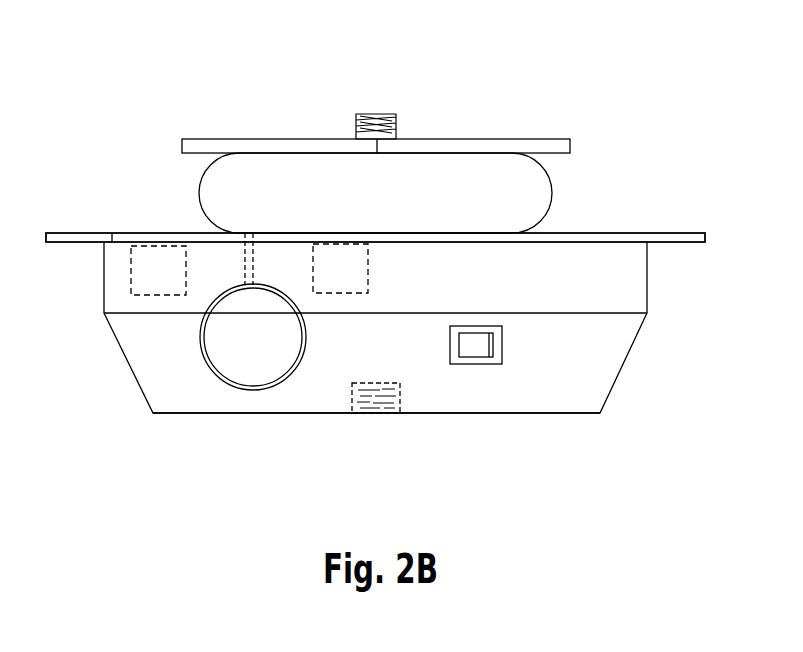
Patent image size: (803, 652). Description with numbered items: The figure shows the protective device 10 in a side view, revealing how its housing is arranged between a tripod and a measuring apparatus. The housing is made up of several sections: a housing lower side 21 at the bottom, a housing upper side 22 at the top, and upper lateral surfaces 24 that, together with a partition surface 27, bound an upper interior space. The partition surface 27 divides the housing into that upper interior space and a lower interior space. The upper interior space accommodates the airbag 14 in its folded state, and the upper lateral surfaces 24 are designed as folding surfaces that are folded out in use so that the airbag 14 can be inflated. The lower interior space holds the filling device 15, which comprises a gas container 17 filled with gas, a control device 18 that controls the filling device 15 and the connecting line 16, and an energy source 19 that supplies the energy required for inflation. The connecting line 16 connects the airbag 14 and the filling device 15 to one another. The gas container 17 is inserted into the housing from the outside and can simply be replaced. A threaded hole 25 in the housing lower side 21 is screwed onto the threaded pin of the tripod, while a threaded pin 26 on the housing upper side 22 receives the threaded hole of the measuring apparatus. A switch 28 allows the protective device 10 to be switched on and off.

The protective device 10 is at (176, 96).
The airbag 14 is at (562, 187).
The filling device 15 is at (155, 349).
The connecting line 16 is at (245, 255).
The gas container 17 is at (251, 333).
The control device 18 is at (340, 268).
The energy source 19 is at (158, 270).
The housing lower side 21 is at (548, 413).
The housing upper side 22 is at (468, 146).
The upper lateral surfaces 24 is at (73, 233).
The threaded hole 25 is at (375, 400).
The threaded pin 26 is at (378, 112).
The partition surface 27 is at (137, 233).
The switch 28 is at (477, 340).